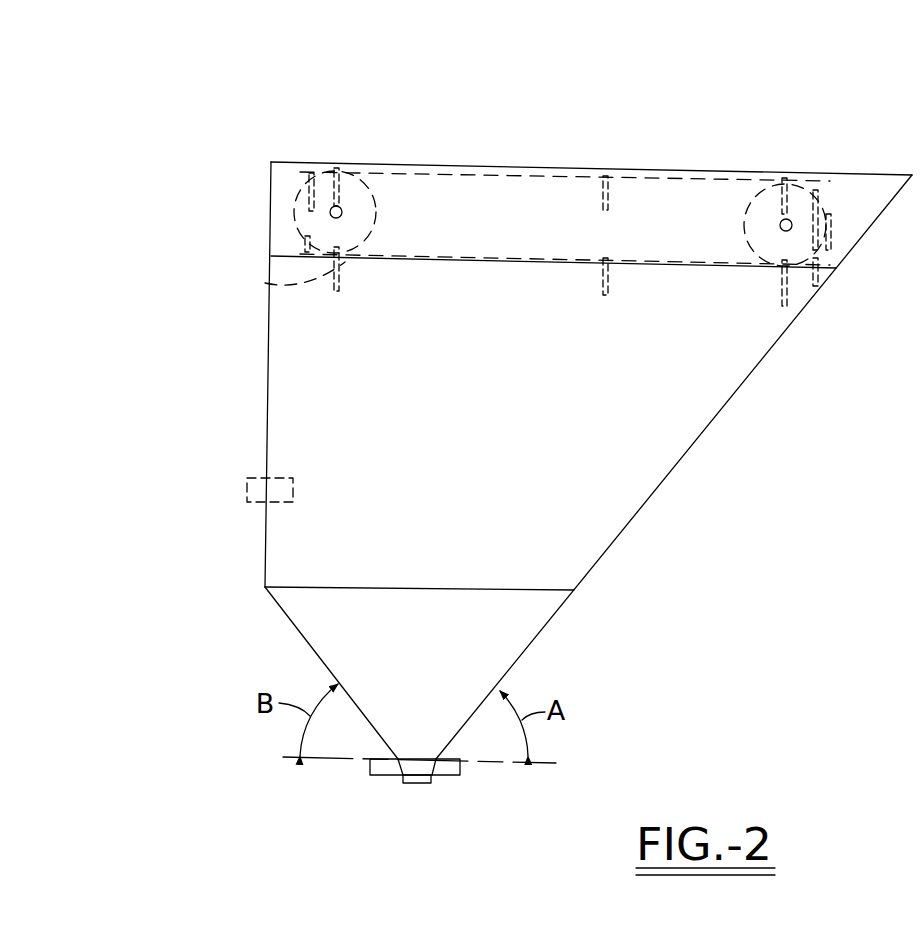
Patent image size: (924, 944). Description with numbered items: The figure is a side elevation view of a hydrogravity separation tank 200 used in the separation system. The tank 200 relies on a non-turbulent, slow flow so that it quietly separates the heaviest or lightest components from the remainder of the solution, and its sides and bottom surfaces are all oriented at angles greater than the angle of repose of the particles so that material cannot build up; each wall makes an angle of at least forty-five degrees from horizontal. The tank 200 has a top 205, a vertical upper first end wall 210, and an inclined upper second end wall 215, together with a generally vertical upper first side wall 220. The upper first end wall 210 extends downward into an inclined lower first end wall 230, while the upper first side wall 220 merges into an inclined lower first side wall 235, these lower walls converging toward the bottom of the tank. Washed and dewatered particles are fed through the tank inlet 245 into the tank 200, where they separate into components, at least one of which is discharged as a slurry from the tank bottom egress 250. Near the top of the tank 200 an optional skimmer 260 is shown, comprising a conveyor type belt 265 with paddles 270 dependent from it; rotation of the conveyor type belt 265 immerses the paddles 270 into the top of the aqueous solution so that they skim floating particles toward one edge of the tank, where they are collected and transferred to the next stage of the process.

The tank 200 is at (480, 156).
The top 205 is at (485, 259).
The vertical upper first end wall 210 is at (268, 333).
The inclined upper second end wall 215 is at (672, 472).
The upper first side wall 220 is at (446, 438).
The inclined lower first end wall 230 is at (304, 640).
The inclined lower first side wall 235 is at (443, 654).
The tank inlet 245 is at (250, 480).
The tank bottom egress 250 is at (413, 783).
The skimmer 260 is at (310, 158).
The conveyor type belt 265 is at (548, 168).
The paddles 270 is at (607, 190).